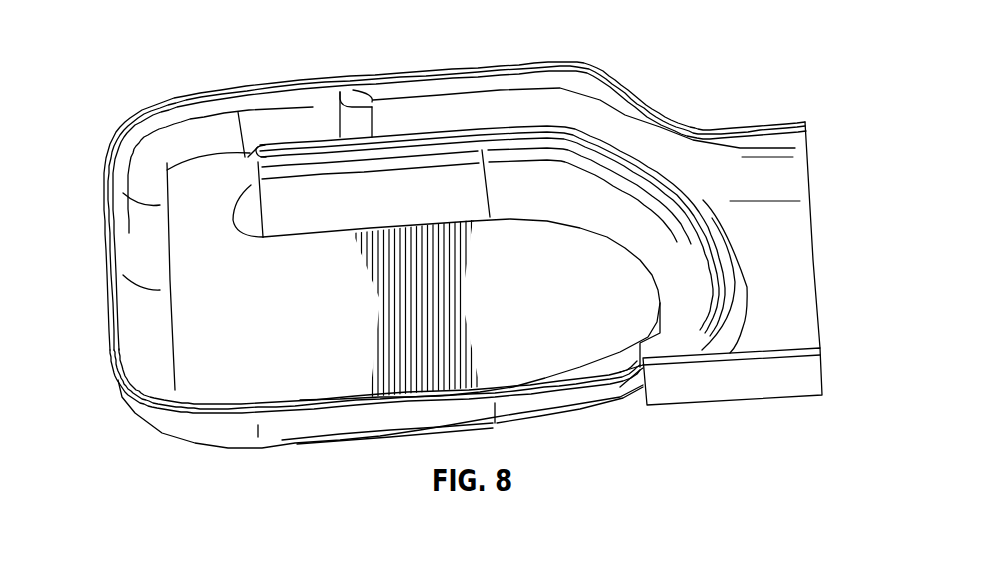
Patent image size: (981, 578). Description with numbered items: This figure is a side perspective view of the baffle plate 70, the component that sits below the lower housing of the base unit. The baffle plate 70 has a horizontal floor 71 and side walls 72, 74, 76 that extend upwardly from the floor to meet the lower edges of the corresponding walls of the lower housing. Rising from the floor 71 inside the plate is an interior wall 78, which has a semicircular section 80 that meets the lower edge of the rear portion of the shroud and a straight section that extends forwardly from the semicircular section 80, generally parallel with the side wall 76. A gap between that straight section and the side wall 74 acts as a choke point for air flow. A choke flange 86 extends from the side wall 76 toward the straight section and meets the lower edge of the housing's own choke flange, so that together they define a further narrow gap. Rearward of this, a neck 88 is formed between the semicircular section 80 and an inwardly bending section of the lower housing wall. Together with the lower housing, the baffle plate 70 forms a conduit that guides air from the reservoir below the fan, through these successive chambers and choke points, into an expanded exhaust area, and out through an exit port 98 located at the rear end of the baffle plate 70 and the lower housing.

The baffle plate 70 is at (850, 290).
The horizontal floor 71 is at (597, 253).
The side wall 72 is at (320, 427).
The side wall 74 is at (109, 295).
The side wall 76 is at (452, 87).
The interior wall 78 is at (387, 300).
The semicircular section 80 is at (714, 218).
The choke flange 86 is at (360, 102).
The neck 88 is at (613, 130).
The exit port 98 is at (826, 324).